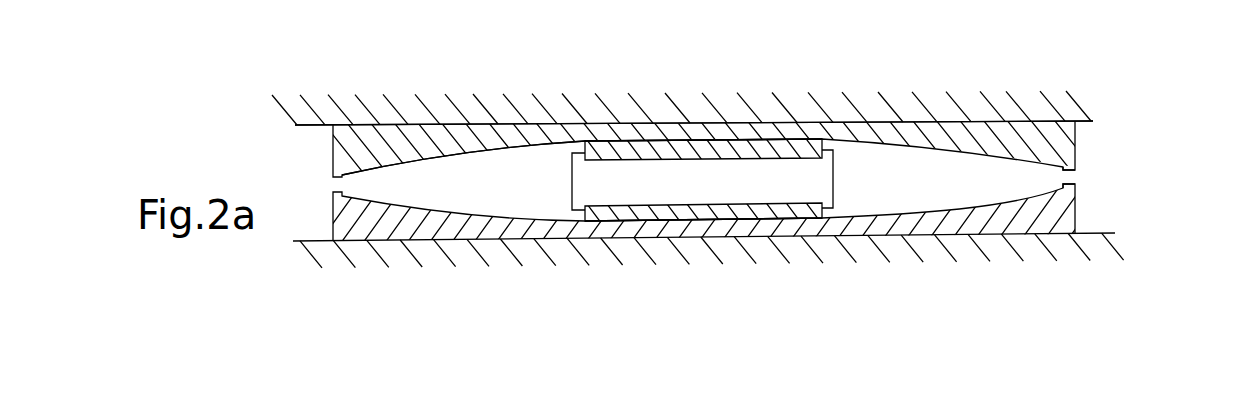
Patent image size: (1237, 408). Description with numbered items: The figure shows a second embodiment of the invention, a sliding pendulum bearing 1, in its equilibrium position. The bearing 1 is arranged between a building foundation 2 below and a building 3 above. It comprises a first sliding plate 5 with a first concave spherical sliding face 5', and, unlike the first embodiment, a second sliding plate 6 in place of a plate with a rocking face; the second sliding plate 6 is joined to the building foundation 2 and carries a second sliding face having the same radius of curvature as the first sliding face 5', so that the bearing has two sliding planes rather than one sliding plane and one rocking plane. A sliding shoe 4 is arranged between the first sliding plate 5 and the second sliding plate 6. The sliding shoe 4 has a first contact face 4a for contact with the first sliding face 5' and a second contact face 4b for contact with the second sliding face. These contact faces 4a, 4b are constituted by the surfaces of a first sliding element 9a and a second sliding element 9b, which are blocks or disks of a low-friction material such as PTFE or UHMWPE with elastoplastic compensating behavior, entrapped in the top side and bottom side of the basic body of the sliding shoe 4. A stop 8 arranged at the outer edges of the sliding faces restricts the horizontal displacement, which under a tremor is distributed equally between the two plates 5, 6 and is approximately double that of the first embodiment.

The sliding pendulum bearing 1 is at (947, 68).
The building foundation 2 is at (953, 275).
The building 3 is at (1067, 107).
The sliding shoe 4 is at (663, 187).
The first contact face 4a is at (628, 128).
The second contact face 4b is at (740, 238).
The first sliding plate 5 is at (710, 106).
The first concave spherical sliding face 5' is at (463, 245).
The second sliding plate 6 is at (488, 201).
The stop 8 is at (1077, 164).
The first sliding element 9a is at (770, 141).
The second sliding element 9b is at (680, 216).